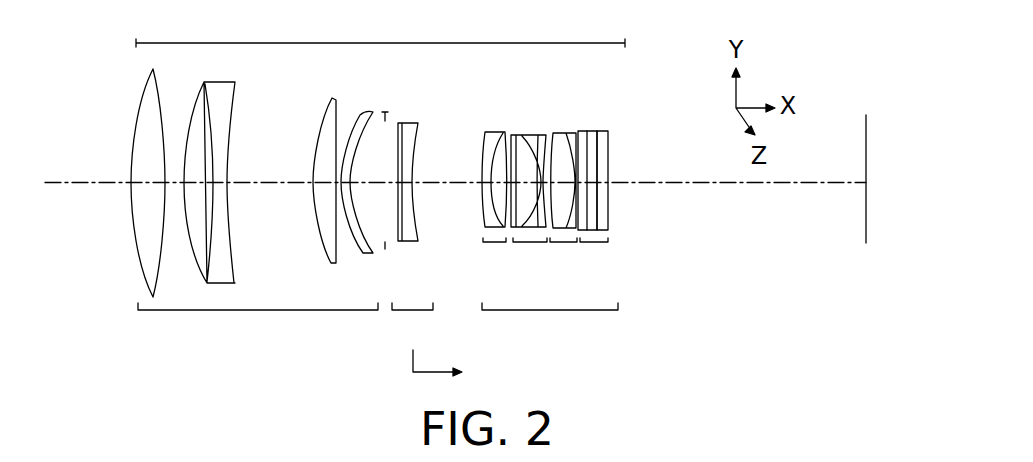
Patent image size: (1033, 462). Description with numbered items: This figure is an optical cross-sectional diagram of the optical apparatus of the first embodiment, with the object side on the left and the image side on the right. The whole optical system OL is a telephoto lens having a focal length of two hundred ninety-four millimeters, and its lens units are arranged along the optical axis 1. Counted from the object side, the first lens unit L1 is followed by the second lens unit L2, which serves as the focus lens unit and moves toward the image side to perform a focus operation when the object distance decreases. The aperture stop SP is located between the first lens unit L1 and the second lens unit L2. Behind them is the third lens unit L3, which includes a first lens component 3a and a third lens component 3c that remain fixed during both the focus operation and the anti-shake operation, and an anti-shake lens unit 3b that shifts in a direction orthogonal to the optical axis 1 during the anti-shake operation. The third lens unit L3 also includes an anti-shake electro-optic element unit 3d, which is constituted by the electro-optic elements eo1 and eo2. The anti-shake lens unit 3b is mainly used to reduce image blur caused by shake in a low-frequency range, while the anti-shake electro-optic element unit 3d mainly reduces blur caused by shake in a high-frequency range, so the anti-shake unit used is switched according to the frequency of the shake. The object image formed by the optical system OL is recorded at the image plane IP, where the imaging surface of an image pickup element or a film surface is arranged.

The optical axis 1 is at (455, 158).
The optical system OL is at (380, 28).
The first lens unit L1 is at (254, 209).
The second lens unit L2 is at (427, 249).
The third lens unit L3 is at (562, 217).
The aperture stop SP is at (386, 113).
The first lens component 3a is at (494, 201).
The anti-shake lens unit 3b is at (529, 203).
The third lens component 3c is at (563, 202).
The anti-shake electro-optic element unit 3d is at (590, 178).
The electro-optic element eo1 is at (581, 131).
The electro-optic element eo2 is at (603, 131).
The image plane IP is at (866, 148).